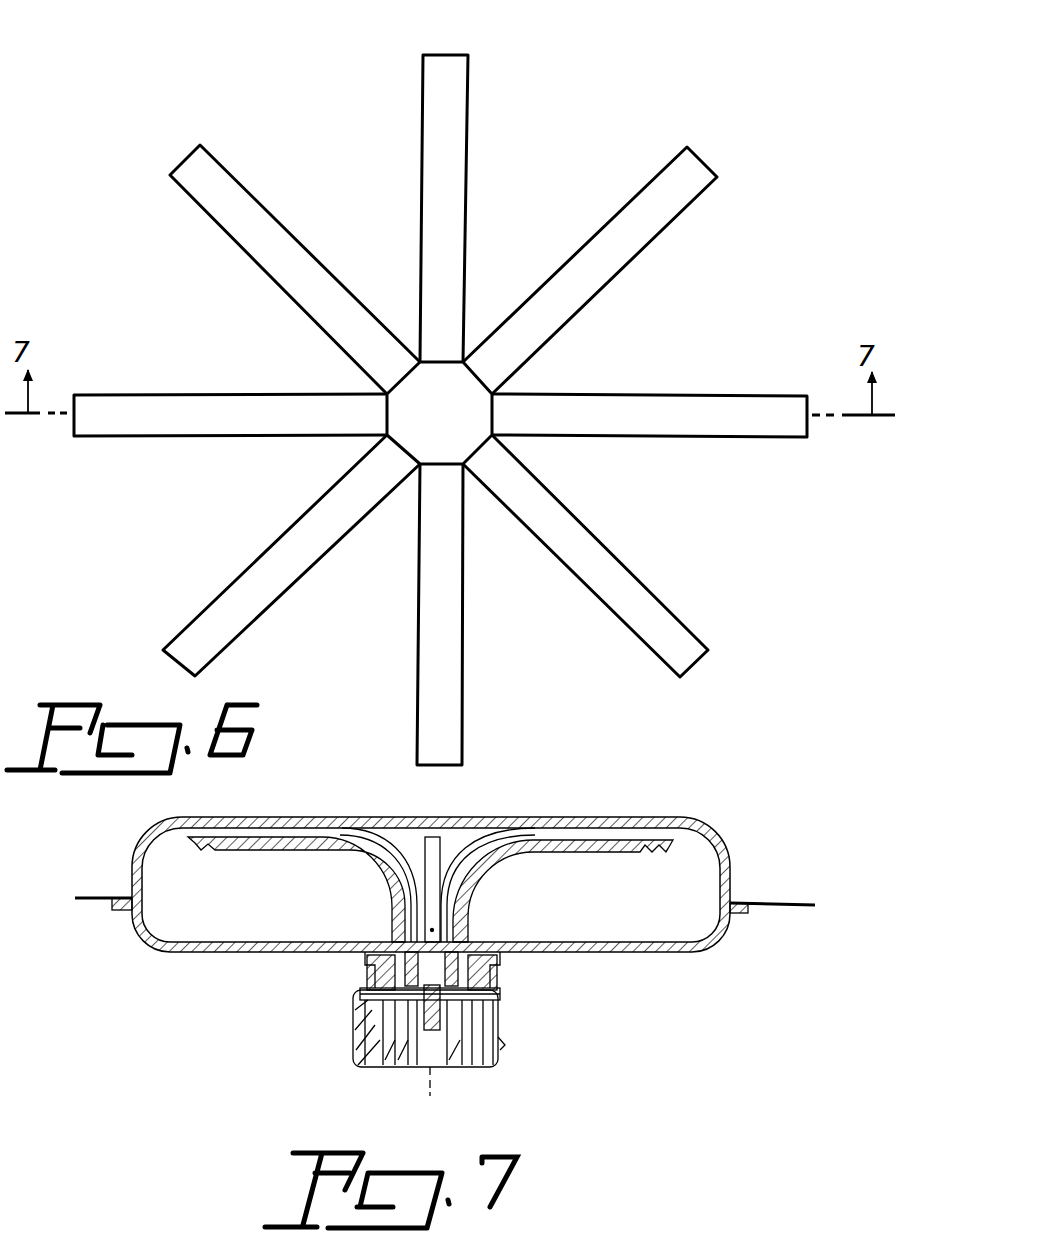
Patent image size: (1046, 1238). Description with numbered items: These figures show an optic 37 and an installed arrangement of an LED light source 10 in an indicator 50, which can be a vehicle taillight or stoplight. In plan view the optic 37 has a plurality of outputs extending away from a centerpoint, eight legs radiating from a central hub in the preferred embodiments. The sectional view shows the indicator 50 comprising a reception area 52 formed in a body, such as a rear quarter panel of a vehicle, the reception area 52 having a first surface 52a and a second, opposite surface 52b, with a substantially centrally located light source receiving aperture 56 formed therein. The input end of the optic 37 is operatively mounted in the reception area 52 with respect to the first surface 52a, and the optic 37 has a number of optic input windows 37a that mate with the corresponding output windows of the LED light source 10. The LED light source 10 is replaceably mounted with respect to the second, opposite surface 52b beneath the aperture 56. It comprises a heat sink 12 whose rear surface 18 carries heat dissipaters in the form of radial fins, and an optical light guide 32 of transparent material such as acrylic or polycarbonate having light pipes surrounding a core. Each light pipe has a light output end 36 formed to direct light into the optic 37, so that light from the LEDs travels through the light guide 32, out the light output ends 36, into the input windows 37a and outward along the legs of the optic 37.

In FIG. 6, the optic 37 is at (230, 487).
In FIG. 7, the optic 37 is at (570, 832).
In FIG. 7, the indicator 50 is at (445, 923).
In FIG. 7, the reception area 52 is at (445, 914).
In FIG. 7, the first surface 52a is at (431, 915).
In FIG. 7, the second, opposite surface 52b is at (608, 953).
In FIG. 7, the light source receiving aperture 56 is at (388, 940).
In FIG. 7, the light output end 36 is at (468, 940).
In FIG. 7, the optical light guide 32 is at (363, 973).
In FIG. 7, the optic input windows 37a is at (500, 990).
In FIG. 7, the LED light source 10 is at (402, 1053).
In FIG. 7, the rear surface 18 is at (443, 1053).
In FIG. 7, the heat sink 12 is at (514, 1062).